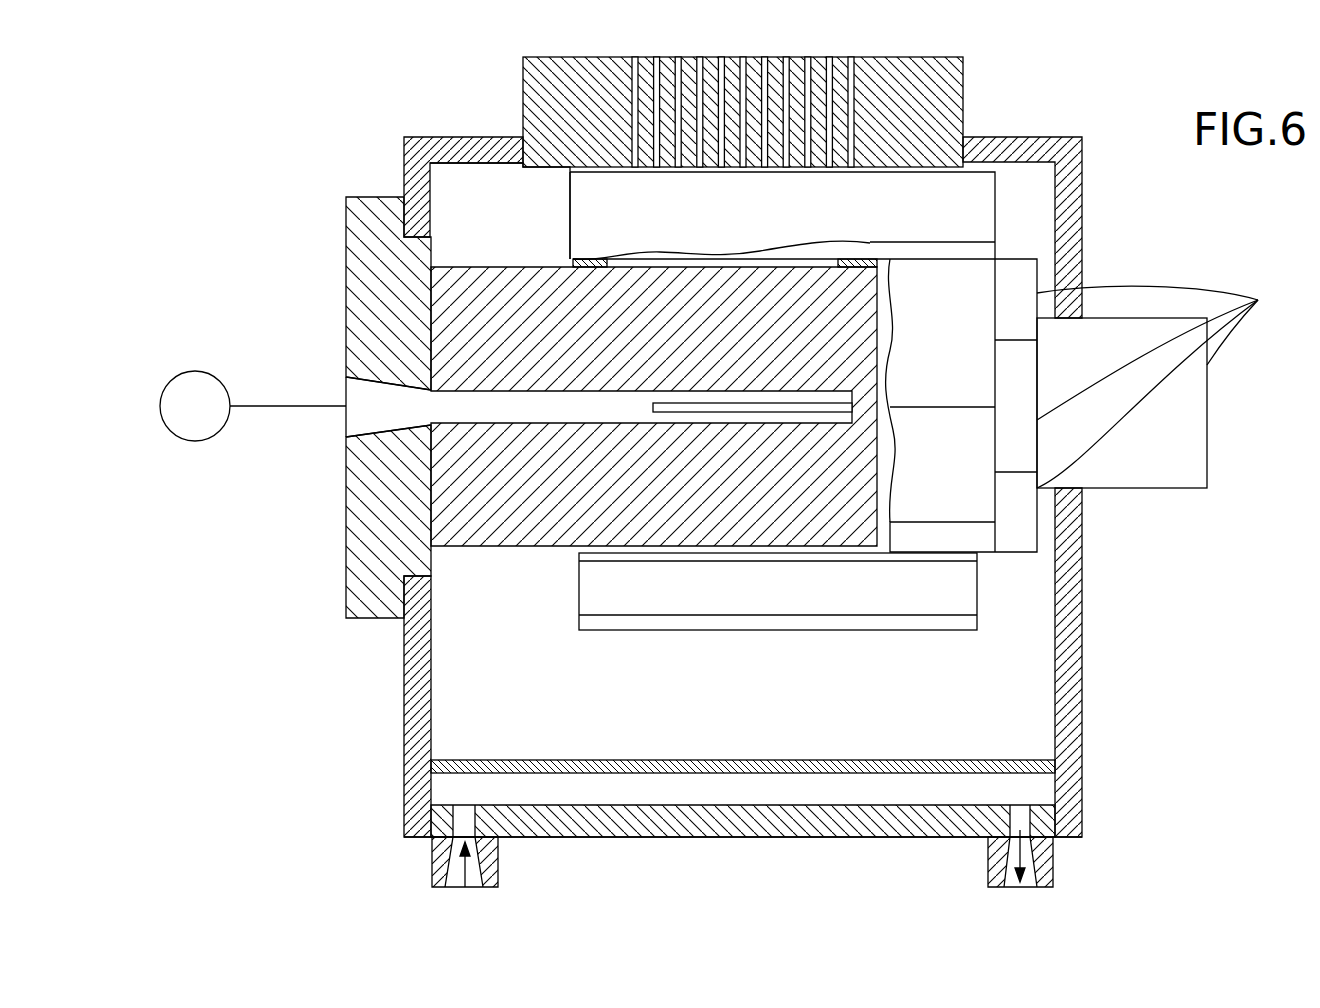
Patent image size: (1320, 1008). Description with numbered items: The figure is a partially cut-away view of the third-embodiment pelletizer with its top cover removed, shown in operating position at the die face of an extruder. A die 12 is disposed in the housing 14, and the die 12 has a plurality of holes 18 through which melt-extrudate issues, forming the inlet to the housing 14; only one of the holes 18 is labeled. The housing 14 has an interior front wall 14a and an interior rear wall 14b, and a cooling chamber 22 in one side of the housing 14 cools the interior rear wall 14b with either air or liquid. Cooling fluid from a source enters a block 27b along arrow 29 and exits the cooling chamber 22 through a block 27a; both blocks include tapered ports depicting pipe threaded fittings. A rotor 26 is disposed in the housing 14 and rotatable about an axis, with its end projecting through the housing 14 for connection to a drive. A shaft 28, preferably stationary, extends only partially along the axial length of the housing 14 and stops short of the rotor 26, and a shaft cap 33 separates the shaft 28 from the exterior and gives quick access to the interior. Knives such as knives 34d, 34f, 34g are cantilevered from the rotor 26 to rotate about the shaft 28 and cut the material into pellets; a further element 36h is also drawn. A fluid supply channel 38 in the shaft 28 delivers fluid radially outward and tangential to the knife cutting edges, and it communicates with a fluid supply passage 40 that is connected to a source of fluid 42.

The die 12 is at (965, 118).
The housing 14 is at (1040, 137).
The interior front wall 14a is at (1062, 165).
The interior rear wall 14b is at (1035, 760).
The holes 18 is at (852, 93).
The cooling chamber 22 is at (737, 798).
The rotor 26 is at (1174, 386).
The block 27a is at (1050, 887).
The block 27b is at (498, 887).
The shaft 28 is at (493, 265).
The arrow 29 is at (465, 872).
The shaft cap 33 is at (346, 573).
The knife 34d is at (977, 580).
The knife 34f is at (997, 510).
The knife 34g is at (995, 205).
The film layer 36h is at (647, 262).
The fluid supply channel 38 is at (673, 403).
The fluid supply passage 40 is at (345, 390).
The source of fluid 42 is at (193, 371).